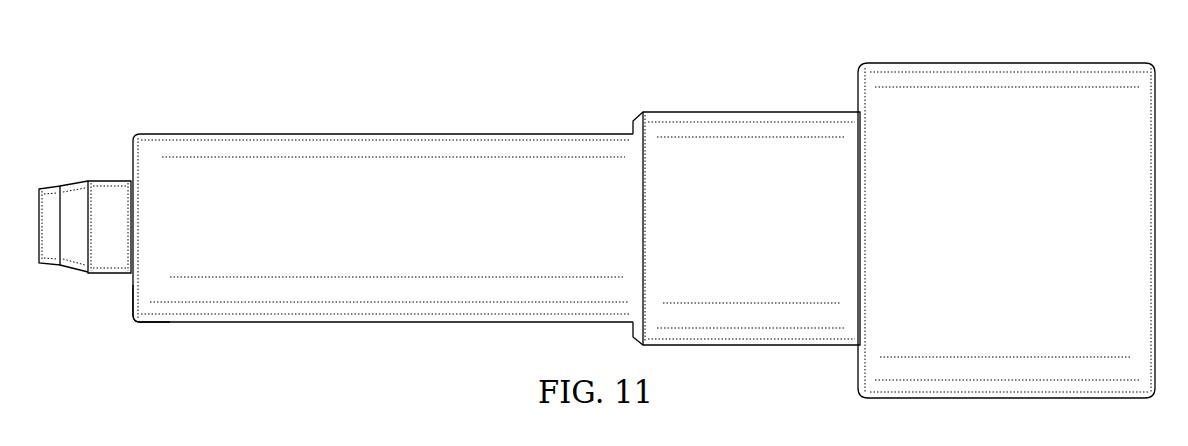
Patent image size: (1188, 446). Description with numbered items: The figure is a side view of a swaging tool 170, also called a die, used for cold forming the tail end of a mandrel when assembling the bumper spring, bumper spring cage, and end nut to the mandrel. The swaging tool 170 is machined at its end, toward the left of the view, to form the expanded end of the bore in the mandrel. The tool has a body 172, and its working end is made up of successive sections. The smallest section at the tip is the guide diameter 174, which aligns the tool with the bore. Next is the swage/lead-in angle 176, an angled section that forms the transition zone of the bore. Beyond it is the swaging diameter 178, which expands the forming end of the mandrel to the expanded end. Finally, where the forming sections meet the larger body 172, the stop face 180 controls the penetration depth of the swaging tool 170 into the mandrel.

The swaging tool 170 is at (256, 80).
The body 172 is at (405, 234).
The guide diameter 174 is at (48, 186).
The swage/lead-in angle 176 is at (74, 275).
The swaging diameter 178 is at (101, 181).
The stop face 180 is at (129, 301).